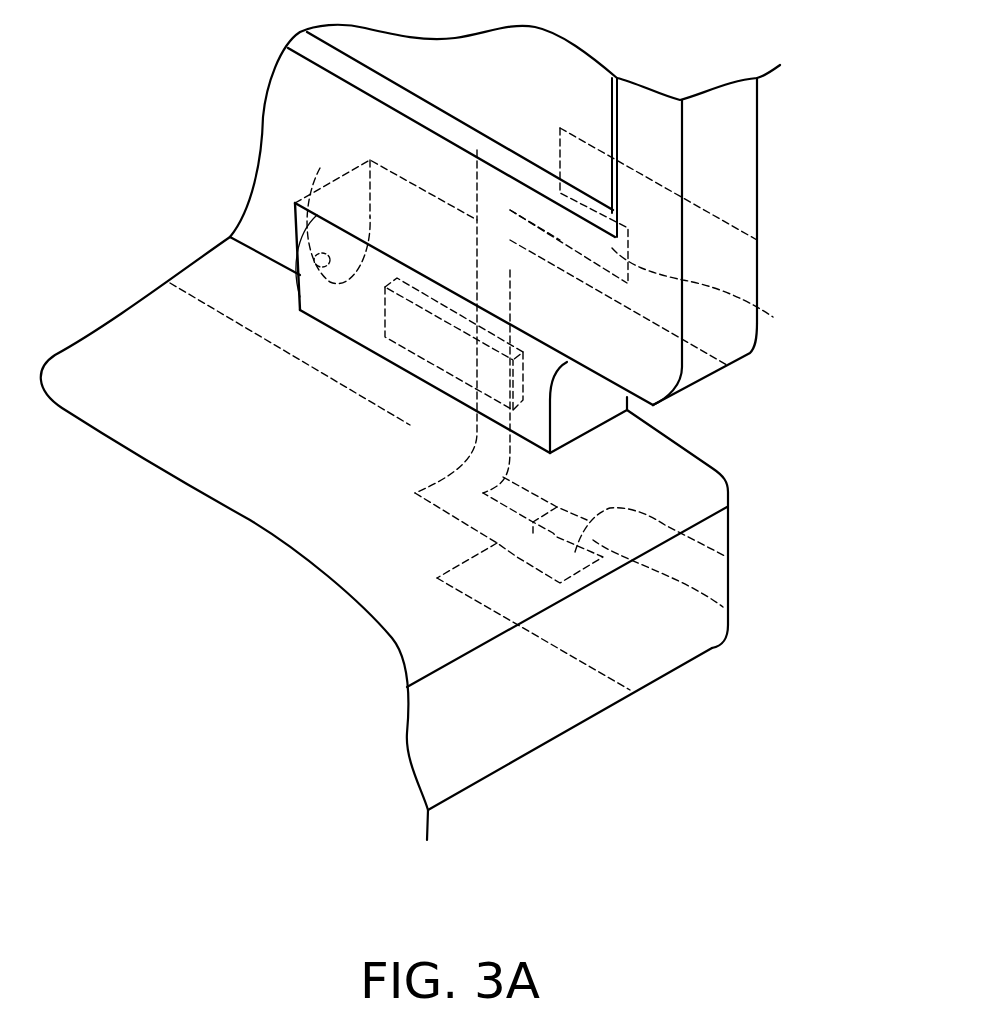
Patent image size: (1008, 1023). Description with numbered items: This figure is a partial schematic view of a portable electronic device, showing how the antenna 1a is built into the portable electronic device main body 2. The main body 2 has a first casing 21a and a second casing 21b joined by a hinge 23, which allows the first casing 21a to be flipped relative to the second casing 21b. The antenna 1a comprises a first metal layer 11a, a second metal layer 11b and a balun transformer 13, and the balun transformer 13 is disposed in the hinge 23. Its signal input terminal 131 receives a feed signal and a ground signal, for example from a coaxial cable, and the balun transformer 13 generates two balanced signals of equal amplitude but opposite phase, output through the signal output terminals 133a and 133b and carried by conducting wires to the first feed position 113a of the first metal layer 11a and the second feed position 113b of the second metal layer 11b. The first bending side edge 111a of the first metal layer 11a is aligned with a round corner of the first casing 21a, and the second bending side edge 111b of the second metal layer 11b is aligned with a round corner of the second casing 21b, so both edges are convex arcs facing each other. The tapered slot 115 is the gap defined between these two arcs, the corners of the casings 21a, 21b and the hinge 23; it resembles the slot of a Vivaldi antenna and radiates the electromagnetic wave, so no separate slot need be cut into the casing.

The portable electronic device main body 2 is at (781, 147).
The first casing 21a is at (745, 168).
The second casing 21b is at (512, 743).
The hinge 23 is at (330, 318).
The antenna 1a is at (372, 496).
The first metal layer 11a is at (740, 268).
The first bending side edge 111a is at (757, 343).
The first feed position 113a is at (727, 290).
The second metal layer 11b is at (655, 662).
The second bending side edge 111b is at (727, 630).
The second feed position 113b is at (728, 557).
The tapered slot 115 is at (740, 428).
The balun transformer 13 is at (330, 373).
The signal input terminal 131 is at (336, 214).
The signal output terminal 133a is at (510, 270).
The signal output terminal 133b is at (463, 433).